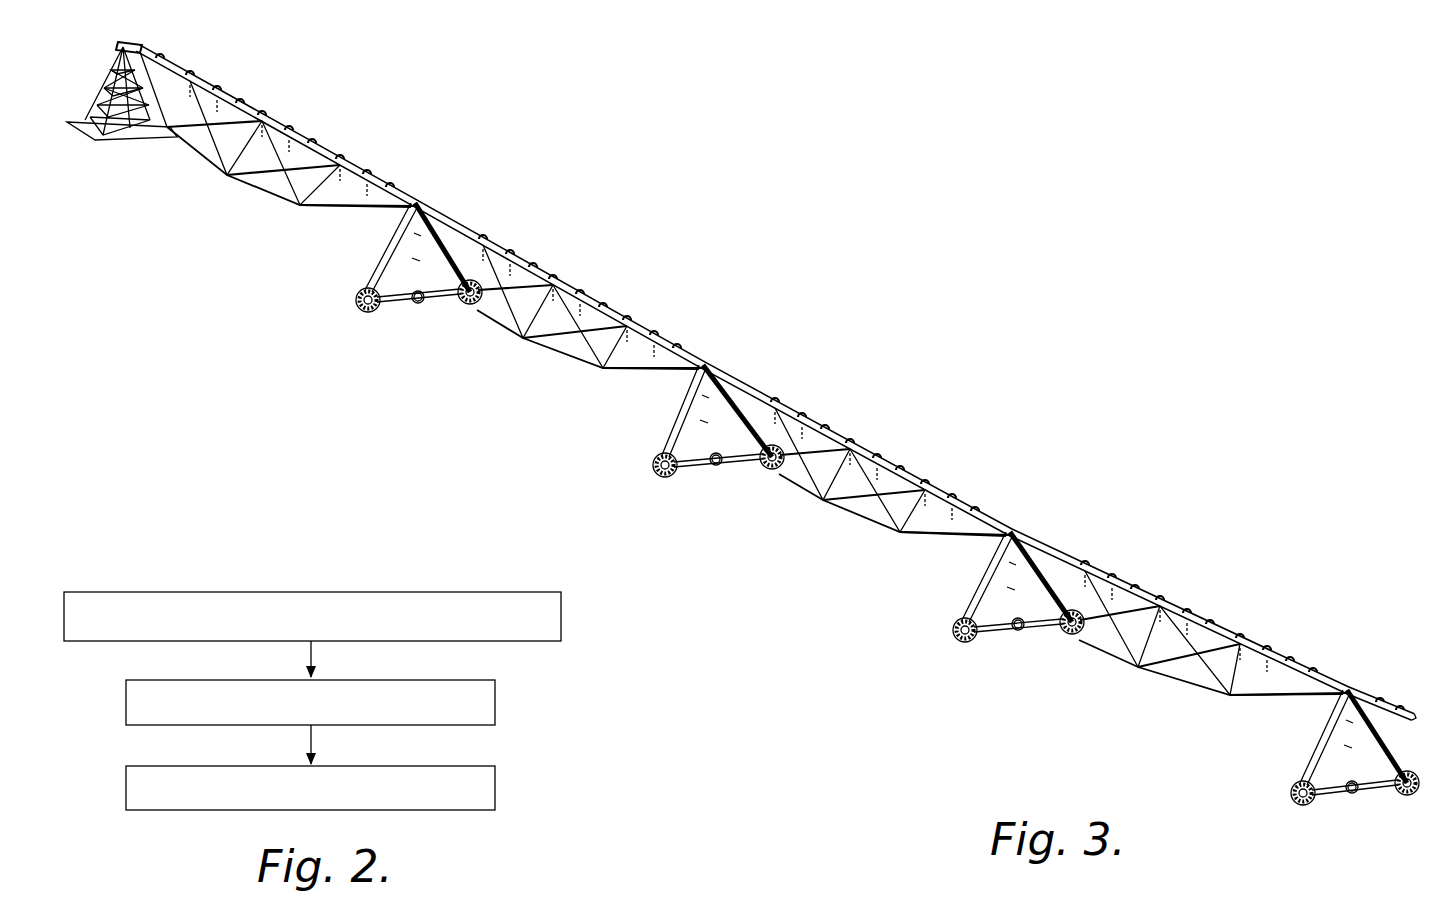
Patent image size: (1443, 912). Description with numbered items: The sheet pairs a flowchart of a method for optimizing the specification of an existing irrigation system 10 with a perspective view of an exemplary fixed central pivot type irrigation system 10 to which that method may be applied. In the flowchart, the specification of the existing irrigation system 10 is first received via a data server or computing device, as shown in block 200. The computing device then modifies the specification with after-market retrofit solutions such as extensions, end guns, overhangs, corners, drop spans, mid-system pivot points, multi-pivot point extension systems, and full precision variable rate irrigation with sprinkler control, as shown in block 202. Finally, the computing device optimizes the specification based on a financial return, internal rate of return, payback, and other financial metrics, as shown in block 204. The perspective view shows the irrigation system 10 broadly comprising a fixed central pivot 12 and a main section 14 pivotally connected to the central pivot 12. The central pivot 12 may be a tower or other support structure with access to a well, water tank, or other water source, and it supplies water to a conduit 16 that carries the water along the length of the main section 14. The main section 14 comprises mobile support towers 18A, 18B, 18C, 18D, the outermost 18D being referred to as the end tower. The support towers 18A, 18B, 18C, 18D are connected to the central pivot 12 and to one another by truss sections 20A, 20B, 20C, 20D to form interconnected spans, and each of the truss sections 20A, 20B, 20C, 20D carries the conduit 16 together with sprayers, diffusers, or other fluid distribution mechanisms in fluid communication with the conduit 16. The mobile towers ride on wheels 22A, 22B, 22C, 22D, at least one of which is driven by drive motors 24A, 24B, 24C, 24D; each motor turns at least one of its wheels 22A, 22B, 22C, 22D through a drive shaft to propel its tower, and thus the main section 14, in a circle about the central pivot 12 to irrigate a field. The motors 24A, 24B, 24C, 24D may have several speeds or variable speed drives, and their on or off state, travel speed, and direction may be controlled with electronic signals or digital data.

In FIG. 3, the irrigation system 10 is at (945, 226).
In FIG. 3, the fixed central pivot 12 is at (97, 167).
In FIG. 3, the main section 14 is at (382, 128).
In FIG. 3, the conduit 16 is at (547, 273).
In FIG. 3, the mobile support tower 18A is at (438, 193).
In FIG. 3, the mobile support tower 18B is at (725, 353).
In FIG. 3, the mobile support tower 18C is at (1031, 519).
In FIG. 3, the end tower 18D is at (1363, 679).
In FIG. 3, the truss section 20A is at (232, 199).
In FIG. 3, the truss section 20B is at (552, 381).
In FIG. 3, the truss section 20C is at (831, 523).
In FIG. 3, the truss section 20D is at (1151, 691).
In FIG. 3, the wheel 22A is at (356, 299).
In FIG. 3, the wheel 22B is at (654, 463).
In FIG. 3, the wheel 22C is at (954, 629).
In FIG. 3, the wheel 22D is at (1291, 794).
In FIG. 3, the drive motor 24A is at (418, 299).
In FIG. 3, the drive motor 24B is at (716, 461).
In FIG. 3, the drive motor 24C is at (1018, 626).
In FIG. 3, the drive motor 24D is at (1352, 791).
In FIG. 2, the block 200 is at (271, 600).
In FIG. 2, the block 202 is at (492, 701).
In FIG. 2, the block 204 is at (492, 789).